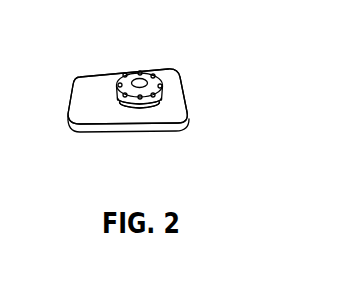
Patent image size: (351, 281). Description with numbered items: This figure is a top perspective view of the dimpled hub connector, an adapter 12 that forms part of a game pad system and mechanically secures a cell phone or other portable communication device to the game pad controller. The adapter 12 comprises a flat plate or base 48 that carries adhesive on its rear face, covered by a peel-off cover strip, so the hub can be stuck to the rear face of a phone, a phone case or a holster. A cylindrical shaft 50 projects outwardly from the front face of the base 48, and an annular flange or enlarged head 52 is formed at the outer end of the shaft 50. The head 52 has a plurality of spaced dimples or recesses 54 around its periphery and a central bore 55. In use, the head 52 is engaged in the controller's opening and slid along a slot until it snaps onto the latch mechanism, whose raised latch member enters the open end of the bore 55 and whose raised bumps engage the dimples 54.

The adapter 12 is at (189, 88).
The flat plate or base 48 is at (85, 119).
The cylindrical shaft 50 is at (140, 108).
The annular flange or enlarged head 52 is at (149, 71).
The dimples or recesses 54 is at (140, 72).
The central bore 55 is at (121, 87).